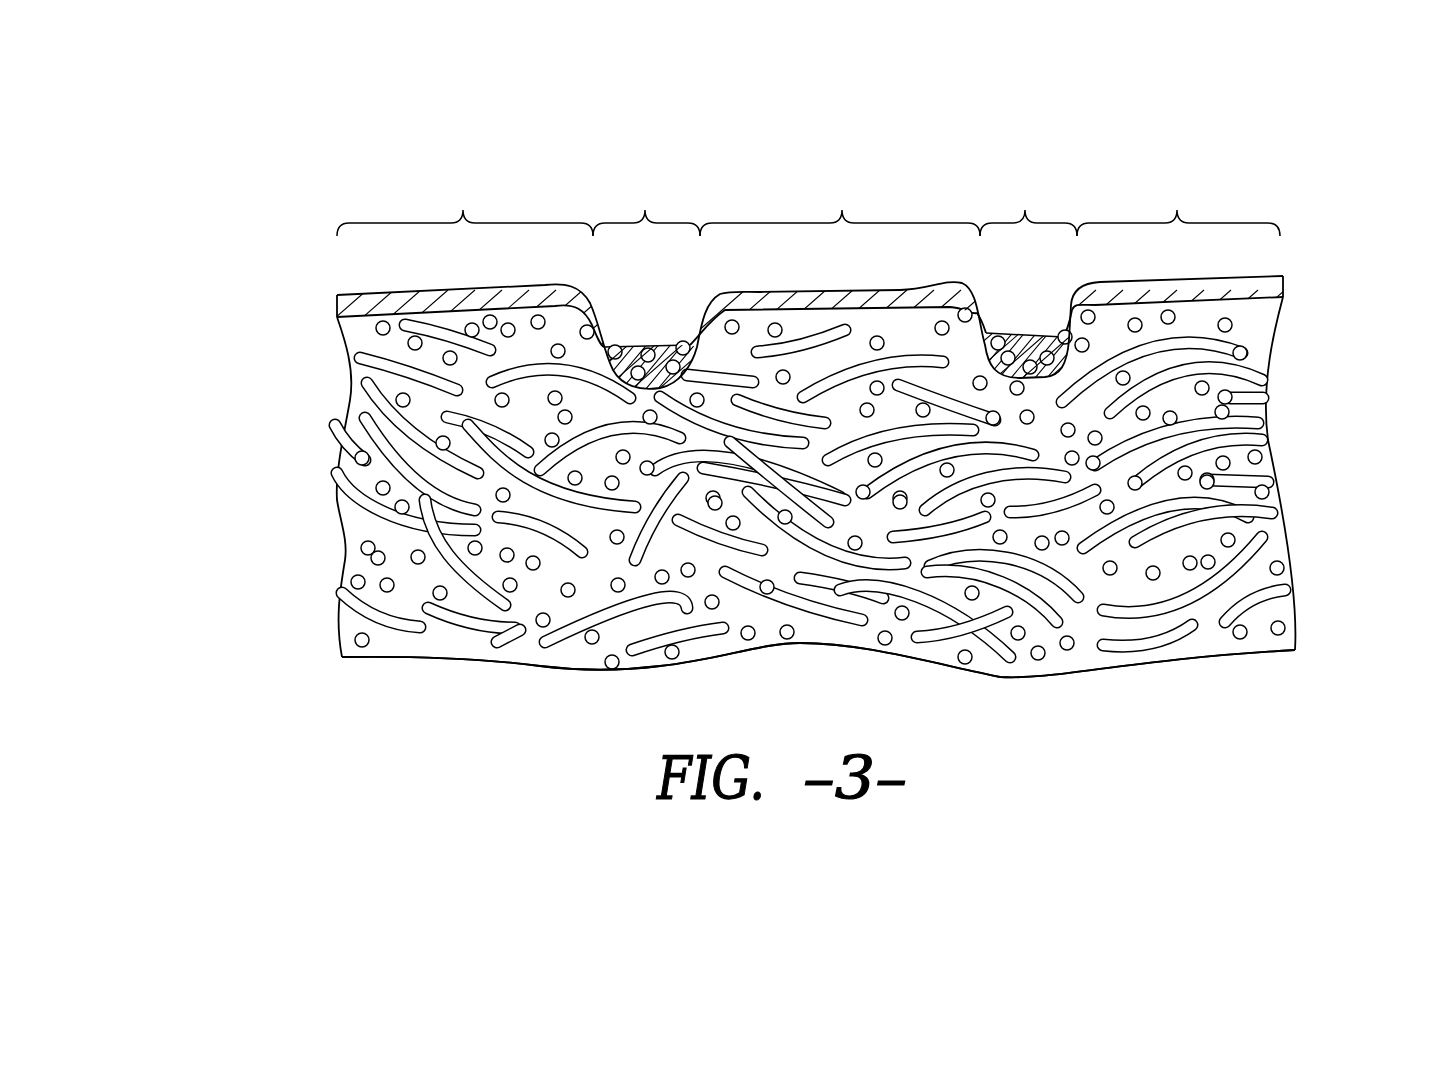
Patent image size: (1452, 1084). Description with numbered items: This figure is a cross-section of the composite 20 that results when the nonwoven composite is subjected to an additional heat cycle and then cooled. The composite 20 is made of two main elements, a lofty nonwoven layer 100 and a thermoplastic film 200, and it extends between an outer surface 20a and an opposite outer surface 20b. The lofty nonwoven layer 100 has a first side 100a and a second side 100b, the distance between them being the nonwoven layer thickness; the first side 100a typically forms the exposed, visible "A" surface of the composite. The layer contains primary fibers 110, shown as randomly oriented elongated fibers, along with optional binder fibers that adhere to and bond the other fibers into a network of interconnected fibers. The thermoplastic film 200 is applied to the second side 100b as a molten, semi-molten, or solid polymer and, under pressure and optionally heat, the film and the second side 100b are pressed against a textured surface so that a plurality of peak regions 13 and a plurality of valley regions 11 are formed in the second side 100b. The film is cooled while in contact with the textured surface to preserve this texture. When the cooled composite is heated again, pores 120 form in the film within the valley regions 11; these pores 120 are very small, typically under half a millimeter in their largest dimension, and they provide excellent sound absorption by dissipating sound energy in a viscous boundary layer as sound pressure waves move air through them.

The composite 20 is at (799, 396).
The first surface of component 20a is at (1310, 650).
The second surface of component 20b is at (1308, 275).
The lofty nonwoven layer 100 is at (245, 318).
The first side 100a is at (320, 655).
The second side 100b is at (322, 317).
The primary fibers 110 is at (383, 494).
The pores 120 is at (627, 345).
The thermoplastic film 200 is at (813, 311).
The peak regions 13 is at (808, 203).
The valley regions 11 is at (835, 203).